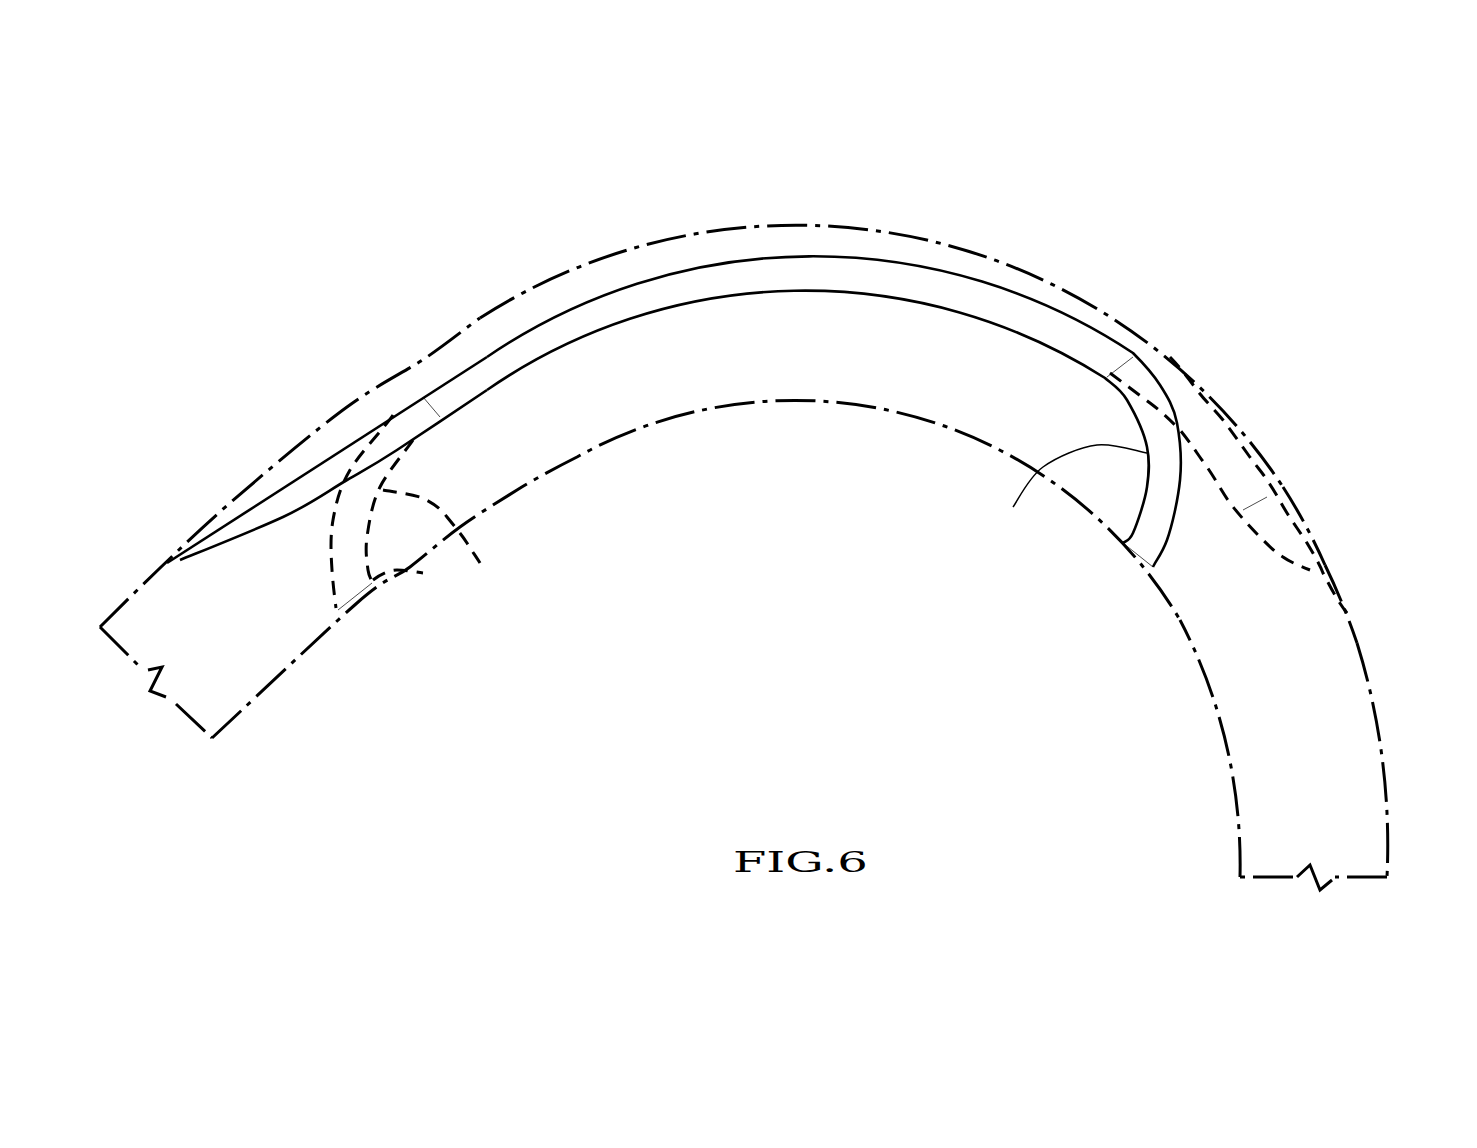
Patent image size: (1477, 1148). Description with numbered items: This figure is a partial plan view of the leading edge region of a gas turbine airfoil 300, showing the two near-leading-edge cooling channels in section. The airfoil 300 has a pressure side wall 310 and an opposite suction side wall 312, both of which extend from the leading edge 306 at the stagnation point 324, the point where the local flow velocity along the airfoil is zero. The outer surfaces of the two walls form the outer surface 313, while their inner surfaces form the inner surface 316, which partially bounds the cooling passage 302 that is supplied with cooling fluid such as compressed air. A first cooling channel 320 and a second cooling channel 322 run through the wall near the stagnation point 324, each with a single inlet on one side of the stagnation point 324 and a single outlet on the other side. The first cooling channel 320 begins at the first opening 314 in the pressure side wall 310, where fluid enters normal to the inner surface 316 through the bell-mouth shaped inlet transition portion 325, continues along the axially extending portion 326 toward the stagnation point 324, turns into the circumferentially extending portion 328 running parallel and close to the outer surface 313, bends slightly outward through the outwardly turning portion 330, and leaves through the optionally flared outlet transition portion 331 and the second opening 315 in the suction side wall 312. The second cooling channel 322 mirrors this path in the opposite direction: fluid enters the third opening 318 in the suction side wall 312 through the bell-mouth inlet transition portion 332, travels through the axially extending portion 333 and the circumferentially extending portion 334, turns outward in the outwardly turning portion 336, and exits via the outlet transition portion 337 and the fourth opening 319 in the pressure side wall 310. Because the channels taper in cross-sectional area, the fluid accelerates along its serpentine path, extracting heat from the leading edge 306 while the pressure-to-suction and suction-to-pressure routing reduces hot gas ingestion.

The gas turbine airfoil 300 is at (425, 172).
The cooling passage 302 is at (828, 636).
The leading edge 306 is at (798, 335).
The pressure side wall 310 is at (215, 655).
The suction side wall 312 is at (1335, 792).
The outer surface 313 is at (1368, 678).
The first opening 314 is at (372, 605).
The second opening 315 is at (1320, 548).
The inner surface 316 is at (1225, 745).
The third opening 318 is at (1130, 540).
The fourth opening 319 is at (202, 530).
The first cooling channel 320 is at (1177, 388).
The second cooling channel 322 is at (347, 445).
The stagnation point 324 is at (772, 200).
The inlet transition portion 325 is at (415, 572).
The axially extending portion 326 is at (480, 563).
The circumferentially extending portion 328 is at (900, 300).
The outwardly turning portion 330 is at (1283, 558).
The outlet transition portion 331 is at (1348, 615).
The inlet transition portion 332 is at (1127, 537).
The axially extending portion 333 is at (1013, 507).
The circumferentially extending portion 334 is at (665, 310).
The outwardly turning portion 336 is at (283, 517).
The outlet transition portion 337 is at (180, 563).